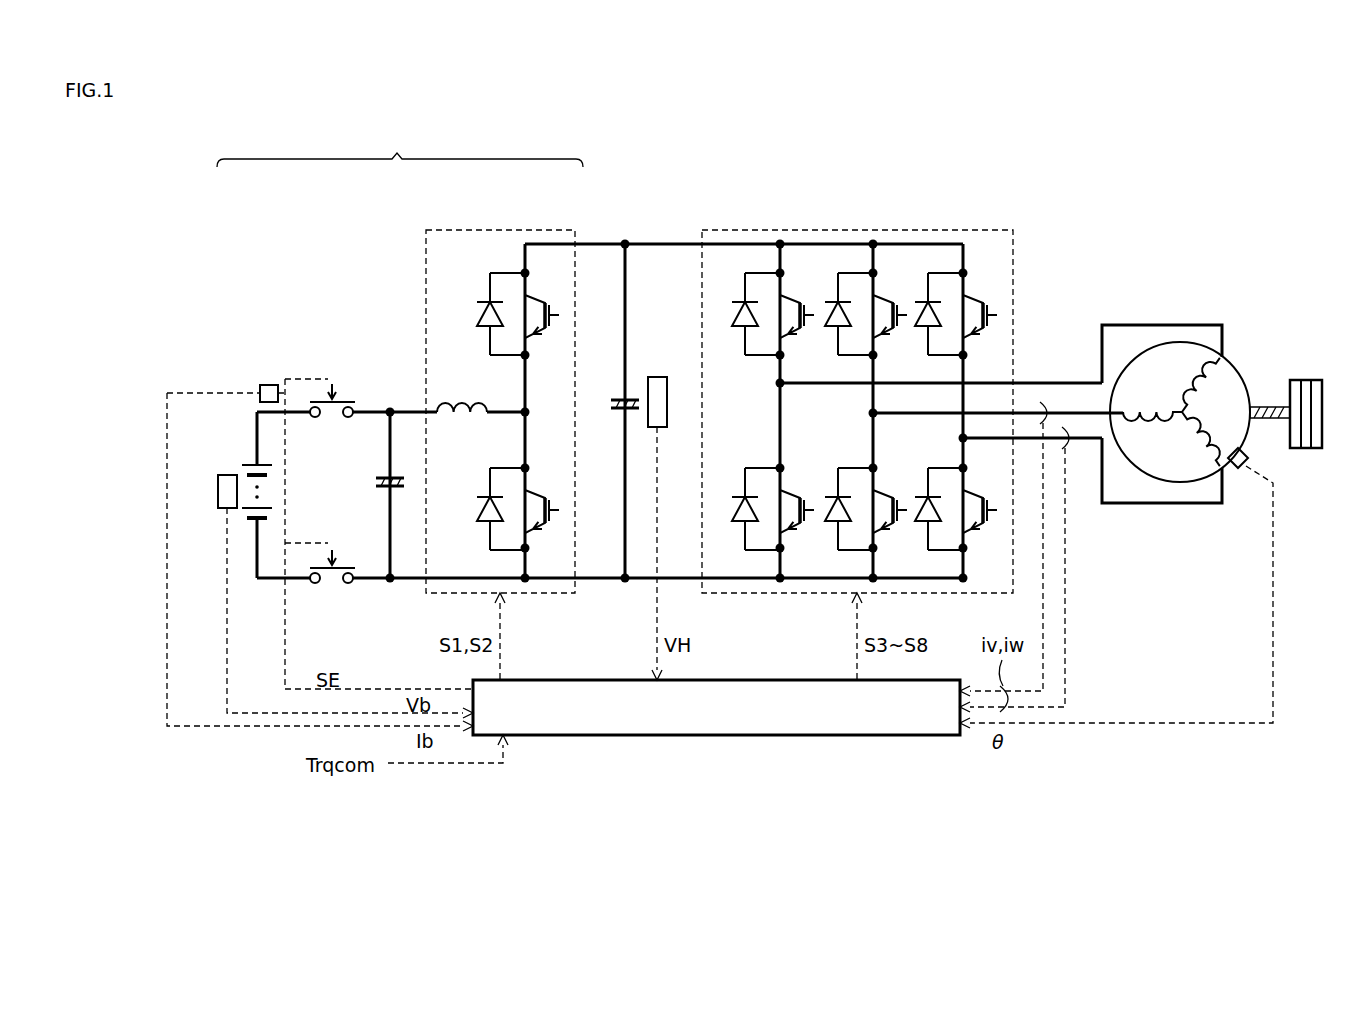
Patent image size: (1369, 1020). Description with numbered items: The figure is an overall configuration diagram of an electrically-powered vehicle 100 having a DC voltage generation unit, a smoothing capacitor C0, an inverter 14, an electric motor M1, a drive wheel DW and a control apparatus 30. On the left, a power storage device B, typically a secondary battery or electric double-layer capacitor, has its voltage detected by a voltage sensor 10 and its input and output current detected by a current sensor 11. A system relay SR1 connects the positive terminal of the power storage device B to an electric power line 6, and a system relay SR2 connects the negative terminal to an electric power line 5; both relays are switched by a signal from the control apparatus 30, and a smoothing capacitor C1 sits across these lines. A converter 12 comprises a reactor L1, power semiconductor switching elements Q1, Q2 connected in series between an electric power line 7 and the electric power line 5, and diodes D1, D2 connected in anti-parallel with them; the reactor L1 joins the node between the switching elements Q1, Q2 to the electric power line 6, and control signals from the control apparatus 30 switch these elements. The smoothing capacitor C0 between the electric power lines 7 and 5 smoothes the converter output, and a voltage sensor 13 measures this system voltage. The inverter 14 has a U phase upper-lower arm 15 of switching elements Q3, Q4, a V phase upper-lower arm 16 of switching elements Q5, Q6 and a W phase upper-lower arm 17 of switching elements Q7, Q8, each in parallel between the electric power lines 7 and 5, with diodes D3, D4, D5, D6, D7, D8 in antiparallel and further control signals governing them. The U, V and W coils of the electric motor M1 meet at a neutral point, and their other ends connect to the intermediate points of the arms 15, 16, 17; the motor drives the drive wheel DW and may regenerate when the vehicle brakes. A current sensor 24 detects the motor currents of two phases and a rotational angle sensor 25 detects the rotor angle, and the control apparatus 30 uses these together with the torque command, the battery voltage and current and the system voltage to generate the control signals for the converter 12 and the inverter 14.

The electrically-powered vehicle 100 is at (1102, 162).
The power storage device B is at (252, 461).
The voltage sensor 10 is at (219, 476).
The current sensor 11 is at (271, 385).
The system relay SR1 is at (345, 400).
The system relay SR2 is at (345, 566).
The electric power line 6 is at (399, 411).
The smoothing capacitor C1 is at (384, 476).
The reactor L1 is at (451, 406).
The converter 12 is at (505, 230).
The diode D1 is at (487, 314).
The power semiconductor switching element Q1 is at (542, 312).
The diode D2 is at (487, 509).
The power semiconductor switching element Q2 is at (542, 507).
The electric power line 7 is at (657, 244).
The electric power line 5 is at (598, 578).
The smoothing capacitor C0 is at (622, 399).
The voltage sensor 13 is at (657, 377).
The inverter 14 is at (853, 230).
The diode D3 is at (748, 314).
The switching element Q3 is at (797, 312).
The diode D4 is at (748, 509).
The switching element Q4 is at (797, 508).
The diode D5 is at (839, 317).
The switching element Q5 is at (890, 312).
The diode D6 is at (839, 511).
The switching element Q6 is at (890, 508).
The diode D7 is at (930, 317).
The switching element Q7 is at (980, 312).
The diode D8 is at (930, 511).
The switching element Q8 is at (980, 508).
The U phase upper-lower arm 15 is at (767, 391).
The V phase upper-lower arm 16 is at (861, 421).
The W phase upper-lower arm 17 is at (951, 445).
The current sensor 24 is at (1042, 400).
The electric motor M1 is at (1243, 375).
The drive wheel DW is at (1308, 380).
The rotational angle sensor 25 is at (1230, 475).
The control apparatus 30 is at (776, 680).